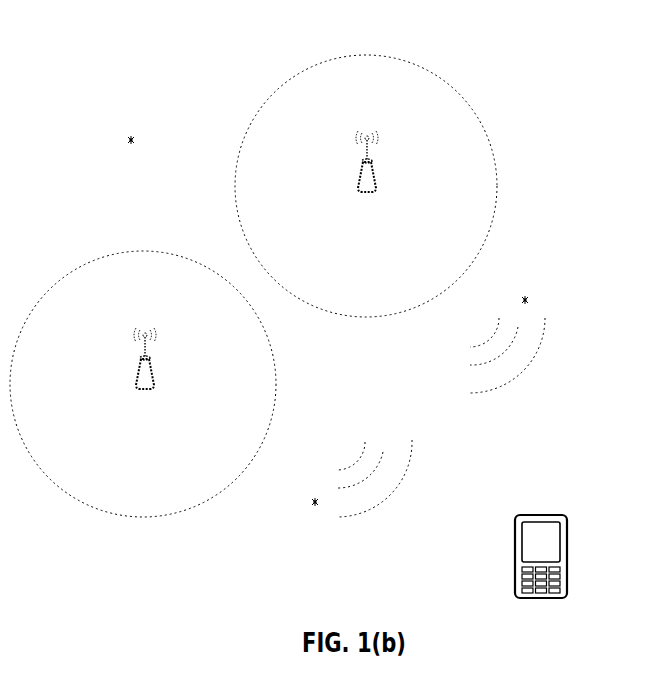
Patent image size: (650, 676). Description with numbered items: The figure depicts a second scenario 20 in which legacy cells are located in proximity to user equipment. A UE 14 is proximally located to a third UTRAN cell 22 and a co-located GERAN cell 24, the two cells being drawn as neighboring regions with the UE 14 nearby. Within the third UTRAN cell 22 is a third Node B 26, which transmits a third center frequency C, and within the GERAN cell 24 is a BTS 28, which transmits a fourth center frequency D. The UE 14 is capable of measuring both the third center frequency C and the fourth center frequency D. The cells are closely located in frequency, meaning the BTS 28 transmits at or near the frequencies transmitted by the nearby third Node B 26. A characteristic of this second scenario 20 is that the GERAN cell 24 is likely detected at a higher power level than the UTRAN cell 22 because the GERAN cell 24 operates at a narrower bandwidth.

The UE 14 is at (567, 527).
The second scenario 20 is at (131, 139).
The third UTRAN cell 22 is at (75, 262).
The GERAN cell 24 is at (440, 77).
The third Node B 26 is at (131, 378).
The BTS 28 is at (358, 177).
The third center frequency C is at (313, 503).
The fourth center frequency D is at (527, 298).